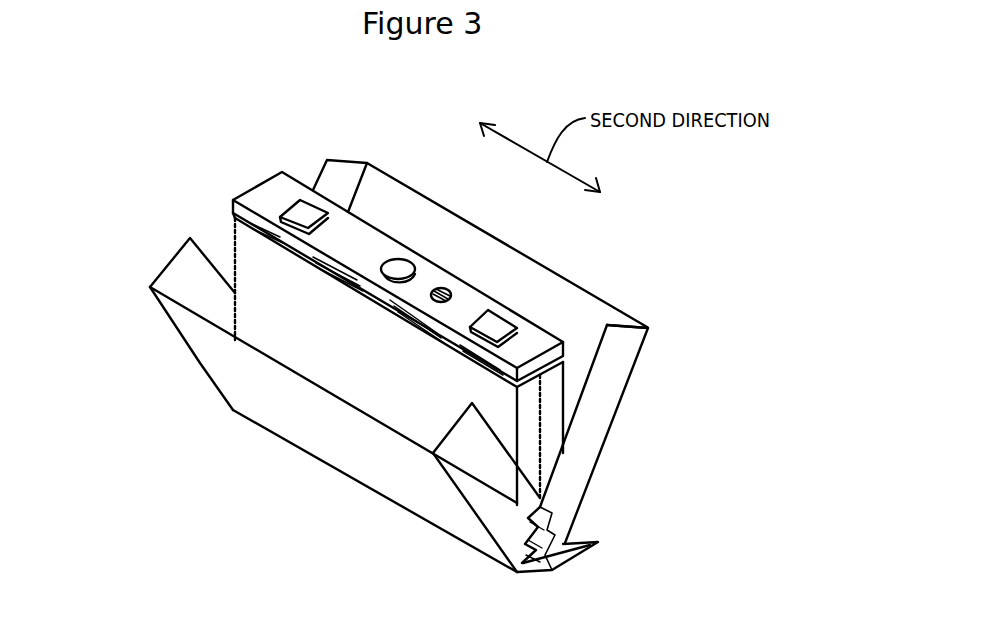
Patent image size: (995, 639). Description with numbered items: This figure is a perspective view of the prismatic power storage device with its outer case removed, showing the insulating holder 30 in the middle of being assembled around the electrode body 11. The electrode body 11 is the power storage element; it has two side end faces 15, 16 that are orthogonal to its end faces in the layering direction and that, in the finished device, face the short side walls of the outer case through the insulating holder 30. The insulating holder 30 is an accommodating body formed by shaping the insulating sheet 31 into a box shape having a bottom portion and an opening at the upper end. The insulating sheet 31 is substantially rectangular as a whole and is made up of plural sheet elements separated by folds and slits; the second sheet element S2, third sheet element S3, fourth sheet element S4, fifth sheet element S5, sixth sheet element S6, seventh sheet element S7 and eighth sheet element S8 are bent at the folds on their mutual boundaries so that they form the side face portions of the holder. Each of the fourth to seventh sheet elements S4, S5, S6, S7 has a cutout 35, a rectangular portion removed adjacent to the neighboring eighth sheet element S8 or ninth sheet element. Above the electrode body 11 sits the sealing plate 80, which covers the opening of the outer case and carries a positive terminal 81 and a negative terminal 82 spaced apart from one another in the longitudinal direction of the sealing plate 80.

The electrode body 11 is at (307, 323).
The side end face 15 is at (550, 415).
The side end face 16 is at (232, 253).
The insulating holder 30 is at (547, 263).
The insulating sheet 31 is at (610, 387).
The cutout 35 is at (552, 527).
The sealing plate 80 is at (380, 240).
The positive terminal 81 is at (500, 313).
The negative terminal 82 is at (307, 203).
The second sheet element S2 is at (462, 248).
The third sheet element S3 is at (320, 423).
The fourth sheet element S4 is at (592, 432).
The fifth sheet element S5 is at (343, 170).
The sixth sheet element S6 is at (487, 480).
The seventh sheet element S7 is at (185, 280).
The eighth sheet element S8 is at (563, 552).